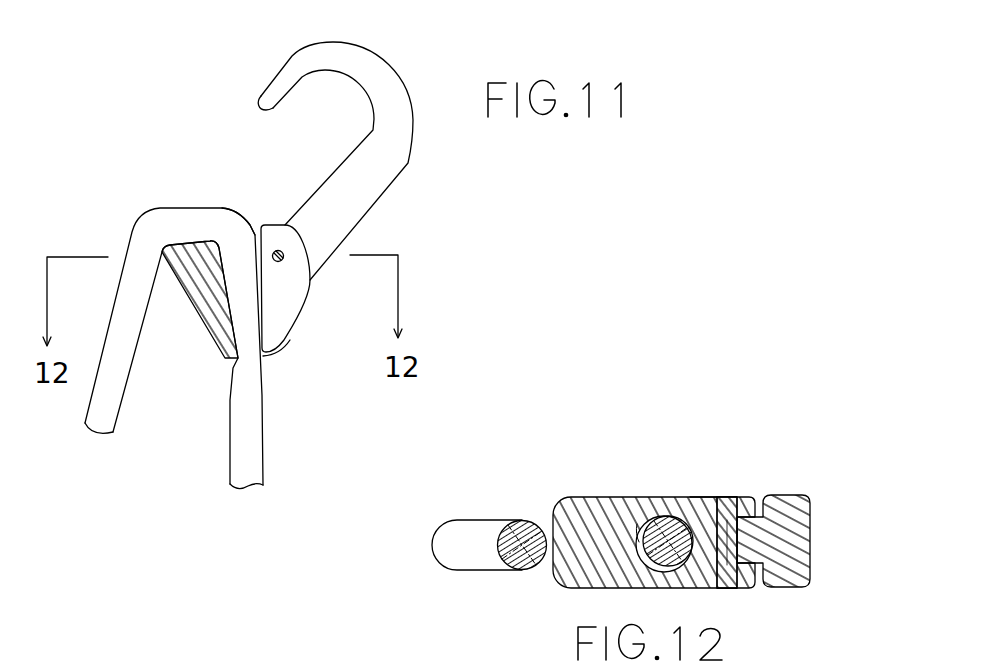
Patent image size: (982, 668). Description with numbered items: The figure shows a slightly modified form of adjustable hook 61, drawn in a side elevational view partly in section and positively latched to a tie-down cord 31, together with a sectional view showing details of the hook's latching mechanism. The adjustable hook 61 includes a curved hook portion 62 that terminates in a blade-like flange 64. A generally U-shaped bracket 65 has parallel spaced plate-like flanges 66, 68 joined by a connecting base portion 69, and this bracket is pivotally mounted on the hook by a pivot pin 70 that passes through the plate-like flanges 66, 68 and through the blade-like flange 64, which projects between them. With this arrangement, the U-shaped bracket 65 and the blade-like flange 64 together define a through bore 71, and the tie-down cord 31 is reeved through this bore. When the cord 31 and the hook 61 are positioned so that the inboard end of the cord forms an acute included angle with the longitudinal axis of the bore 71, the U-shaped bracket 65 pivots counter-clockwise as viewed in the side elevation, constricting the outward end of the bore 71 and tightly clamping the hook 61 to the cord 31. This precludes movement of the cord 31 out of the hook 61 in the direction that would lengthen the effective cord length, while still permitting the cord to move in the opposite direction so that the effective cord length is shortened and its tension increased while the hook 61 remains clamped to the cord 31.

In FIG. 11, the adjustable hook 61 is at (173, 101).
In FIG. 12, the adjustable hook 61 is at (708, 447).
In FIG. 11, the hook portion 62 is at (378, 168).
In FIG. 12, the hook portion 62 is at (797, 497).
In FIG. 11, the blade-like flange 64 is at (281, 300).
In FIG. 12, the blade-like flange 64 is at (708, 556).
In FIG. 11, the U-shaped bracket 65 is at (220, 366).
In FIG. 12, the U-shaped bracket 65 is at (545, 578).
In FIG. 11, the plate-like flange 66 is at (283, 340).
In FIG. 12, the plate-like flange 66 is at (722, 467).
In FIG. 12, the plate-like flange 68 is at (686, 582).
In FIG. 11, the connecting base portion 69 is at (201, 312).
In FIG. 12, the connecting base portion 69 is at (593, 562).
In FIG. 11, the pivot pin 70 is at (278, 250).
In FIG. 12, the pivot pin 70 is at (730, 497).
In FIG. 11, the through bore 71 is at (260, 248).
In FIG. 12, the through bore 71 is at (638, 532).
In FIG. 11, the tie-down cord 31 is at (108, 410).
In FIG. 12, the tie-down cord 31 is at (468, 537).